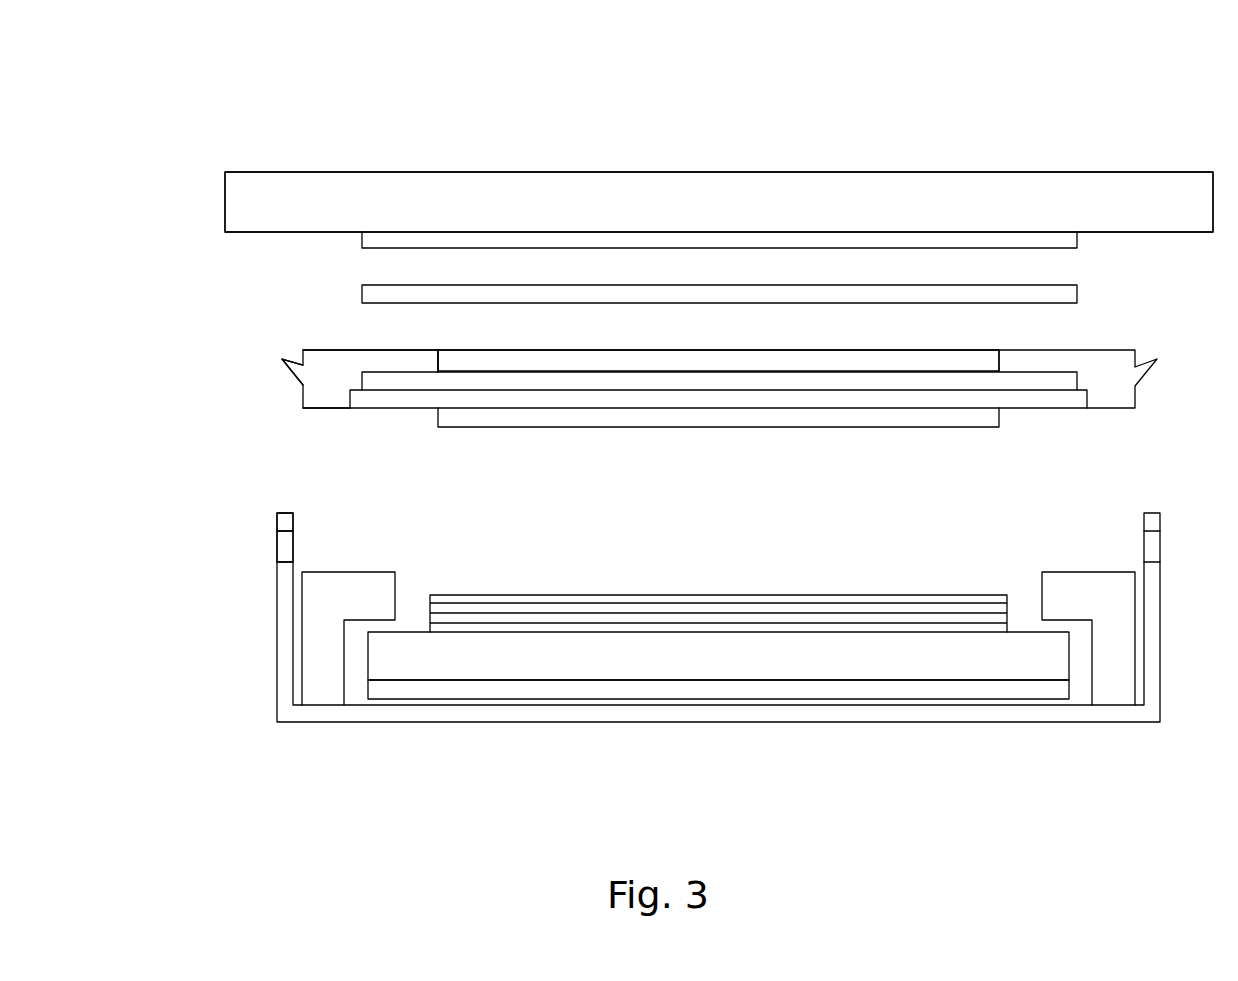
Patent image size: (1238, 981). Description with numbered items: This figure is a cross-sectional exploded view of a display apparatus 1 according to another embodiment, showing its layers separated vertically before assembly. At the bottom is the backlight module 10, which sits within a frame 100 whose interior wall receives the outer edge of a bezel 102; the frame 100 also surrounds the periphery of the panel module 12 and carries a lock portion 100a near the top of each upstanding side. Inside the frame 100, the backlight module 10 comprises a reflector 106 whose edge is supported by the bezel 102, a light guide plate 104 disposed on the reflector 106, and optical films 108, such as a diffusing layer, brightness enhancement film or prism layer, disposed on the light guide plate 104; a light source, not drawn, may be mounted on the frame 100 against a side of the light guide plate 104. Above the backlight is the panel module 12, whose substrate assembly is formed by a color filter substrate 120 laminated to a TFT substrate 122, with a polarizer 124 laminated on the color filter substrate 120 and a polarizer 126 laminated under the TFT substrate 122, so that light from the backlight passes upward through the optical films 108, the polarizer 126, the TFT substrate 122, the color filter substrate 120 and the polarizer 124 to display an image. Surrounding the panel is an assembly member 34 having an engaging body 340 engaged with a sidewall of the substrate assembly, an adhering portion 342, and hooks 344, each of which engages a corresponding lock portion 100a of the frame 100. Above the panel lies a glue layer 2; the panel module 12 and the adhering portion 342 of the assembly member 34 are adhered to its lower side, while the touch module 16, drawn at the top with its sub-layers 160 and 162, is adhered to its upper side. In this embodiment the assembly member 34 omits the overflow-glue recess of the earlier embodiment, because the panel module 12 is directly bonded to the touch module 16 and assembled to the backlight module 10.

The display apparatus 1 is at (202, 127).
The glue layer 2 is at (531, 293).
The backlight module 10 is at (662, 722).
The panel module 12 is at (588, 480).
The touch module 16 is at (1062, 105).
The assembly member 34 is at (1114, 360).
The frame 100 is at (283, 687).
The lock portion 100a is at (283, 545).
The bezel 102 is at (320, 687).
The light guide plate 104 is at (1023, 660).
The reflector 106 is at (938, 690).
The optical films 108 is at (508, 582).
The color filter substrate 120 is at (873, 383).
The TFT substrate 122 is at (788, 402).
The polarizer 124 is at (698, 364).
The polarizer 126 is at (618, 418).
The cover glass 160 is at (880, 195).
The light shielding layer 162 is at (987, 240).
The engaging body 340 is at (325, 400).
The adhering portion 342 is at (418, 362).
The hooks 344 is at (292, 368).